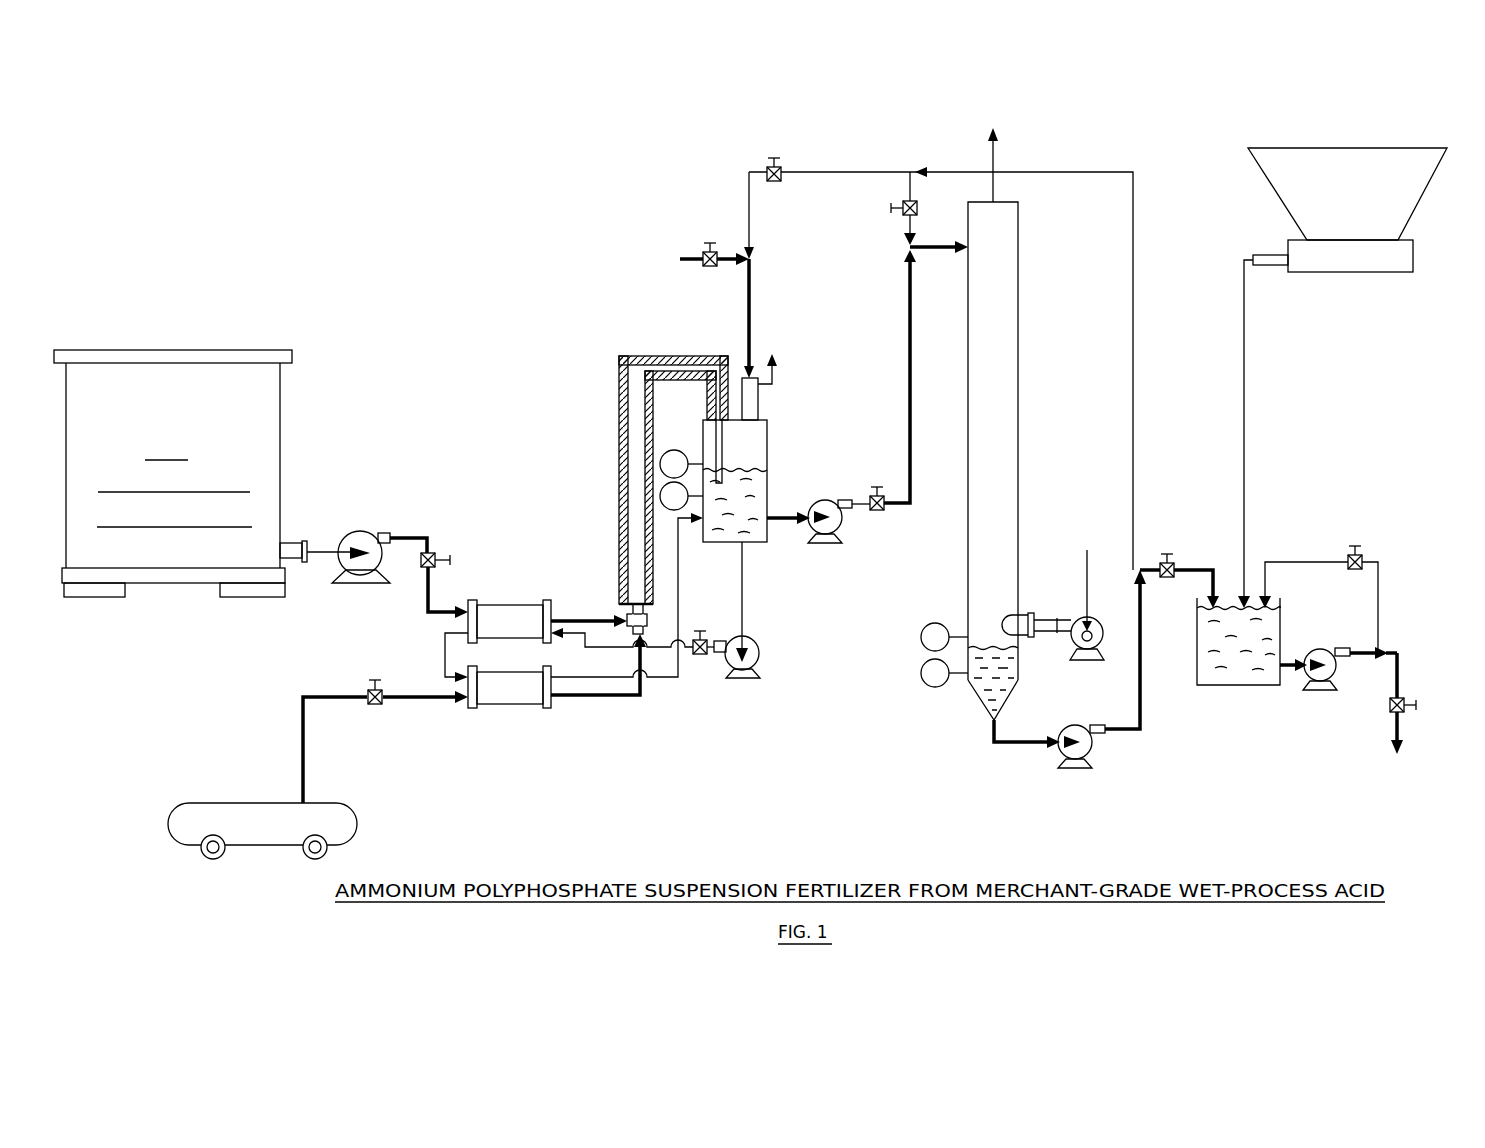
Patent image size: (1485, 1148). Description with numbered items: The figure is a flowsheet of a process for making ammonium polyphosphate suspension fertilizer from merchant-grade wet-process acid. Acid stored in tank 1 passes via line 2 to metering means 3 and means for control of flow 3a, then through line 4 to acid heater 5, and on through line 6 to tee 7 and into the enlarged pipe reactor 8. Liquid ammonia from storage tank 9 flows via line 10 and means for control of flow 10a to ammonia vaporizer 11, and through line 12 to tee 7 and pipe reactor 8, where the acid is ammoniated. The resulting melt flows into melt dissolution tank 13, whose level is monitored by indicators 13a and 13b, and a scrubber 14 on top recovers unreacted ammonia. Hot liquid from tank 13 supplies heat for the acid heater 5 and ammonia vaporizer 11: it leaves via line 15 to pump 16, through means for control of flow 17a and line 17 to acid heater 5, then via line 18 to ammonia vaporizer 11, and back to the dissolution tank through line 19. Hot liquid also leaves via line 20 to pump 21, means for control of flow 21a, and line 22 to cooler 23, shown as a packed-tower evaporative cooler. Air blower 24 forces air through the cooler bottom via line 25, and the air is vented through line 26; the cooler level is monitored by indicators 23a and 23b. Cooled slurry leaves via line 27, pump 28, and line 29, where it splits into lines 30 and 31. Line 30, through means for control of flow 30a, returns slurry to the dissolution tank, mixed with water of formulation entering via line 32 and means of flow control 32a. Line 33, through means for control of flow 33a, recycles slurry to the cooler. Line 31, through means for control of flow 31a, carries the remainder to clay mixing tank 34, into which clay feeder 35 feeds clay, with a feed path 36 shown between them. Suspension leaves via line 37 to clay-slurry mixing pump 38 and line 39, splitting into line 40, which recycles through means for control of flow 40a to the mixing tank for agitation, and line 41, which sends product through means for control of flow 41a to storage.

The tank 1 is at (180, 352).
The line 2 is at (314, 550).
The metering means 3 is at (363, 533).
The means for control of flow 3a is at (435, 551).
The line 4 is at (425, 594).
The acid heater 5 is at (551, 607).
The line 6 is at (588, 620).
The tee 7 is at (649, 617).
The enlarged pipe reactor 8 is at (618, 469).
The storage tank 9 is at (271, 857).
The line 10 is at (322, 691).
The means for control of flow 10a is at (371, 706).
The ammonia vaporizer 11 is at (499, 673).
The line 12 is at (635, 697).
The melt dissolution tank 13 is at (766, 447).
The indicator 13a is at (672, 449).
The indicator 13b is at (673, 511).
The scrubber 14 is at (760, 396).
The line 15 is at (742, 593).
The pump 16 is at (759, 659).
The line 17 is at (652, 652).
The means for control of flow 17a is at (700, 654).
The line 18 is at (443, 643).
The line 19 is at (579, 677).
The line 20 is at (783, 513).
The pump 21 is at (821, 544).
The means for control of flow 21a is at (877, 511).
The line 22 is at (912, 472).
The cooler 23 is at (1018, 382).
The indicator 23a is at (920, 635).
The indicator 23b is at (920, 673).
The air blower 24 is at (1102, 623).
The line 25 is at (1049, 616).
The line 26 is at (994, 170).
The line 27 is at (990, 734).
The pump 28 is at (1084, 766).
The line 29 is at (1122, 730).
The line 30 is at (1091, 169).
The means for control of flow 30a is at (782, 172).
The line 31 is at (1143, 558).
The means for control of flow 31a is at (1175, 563).
The line 32 is at (688, 252).
The means of flow control 32a is at (705, 266).
The line 33 is at (911, 222).
The means for control of flow 33a is at (902, 202).
The clay mixing tank 34 is at (1245, 688).
The clay feeder 35 is at (1355, 274).
The clay feed line 36 is at (1245, 492).
The line 37 is at (1298, 653).
The clay-slurry mixing pump 38 is at (1329, 685).
The line 39 is at (1357, 652).
The line 40 is at (1378, 611).
The means for control of flow 40a is at (1362, 557).
The line 41 is at (1400, 681).
The means for control of flow 41a is at (1404, 713).